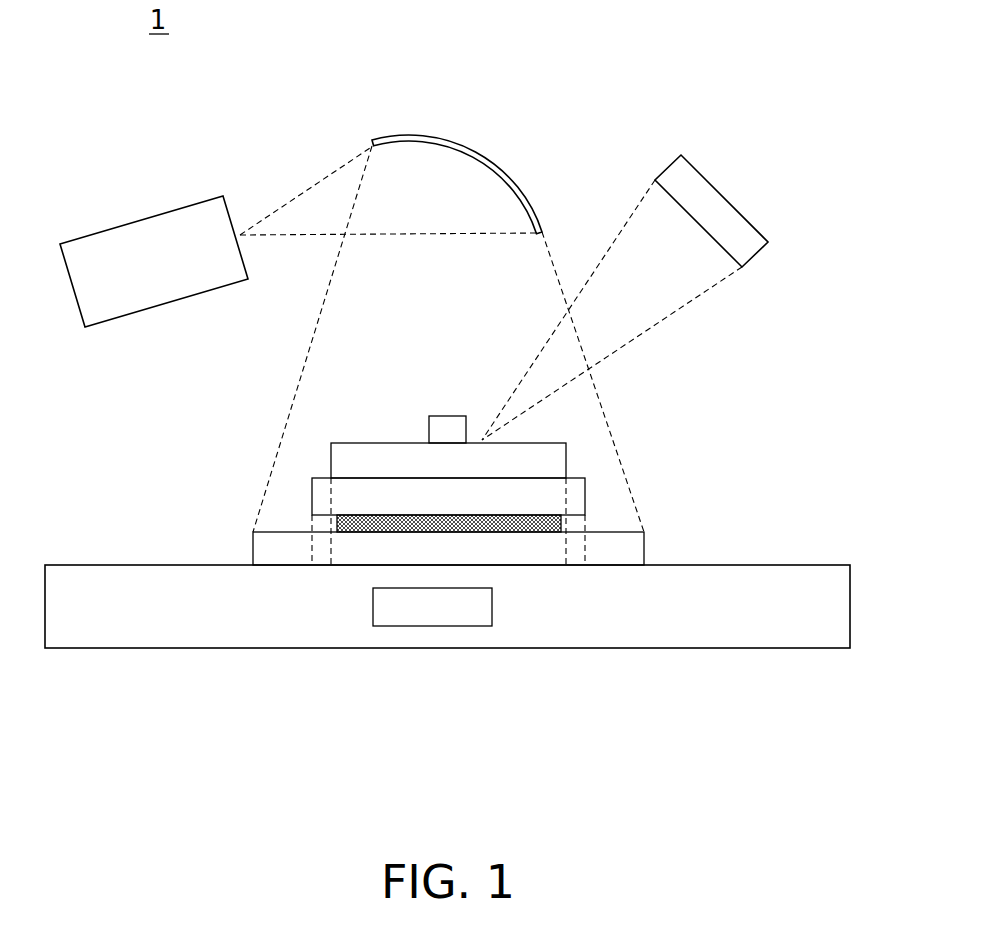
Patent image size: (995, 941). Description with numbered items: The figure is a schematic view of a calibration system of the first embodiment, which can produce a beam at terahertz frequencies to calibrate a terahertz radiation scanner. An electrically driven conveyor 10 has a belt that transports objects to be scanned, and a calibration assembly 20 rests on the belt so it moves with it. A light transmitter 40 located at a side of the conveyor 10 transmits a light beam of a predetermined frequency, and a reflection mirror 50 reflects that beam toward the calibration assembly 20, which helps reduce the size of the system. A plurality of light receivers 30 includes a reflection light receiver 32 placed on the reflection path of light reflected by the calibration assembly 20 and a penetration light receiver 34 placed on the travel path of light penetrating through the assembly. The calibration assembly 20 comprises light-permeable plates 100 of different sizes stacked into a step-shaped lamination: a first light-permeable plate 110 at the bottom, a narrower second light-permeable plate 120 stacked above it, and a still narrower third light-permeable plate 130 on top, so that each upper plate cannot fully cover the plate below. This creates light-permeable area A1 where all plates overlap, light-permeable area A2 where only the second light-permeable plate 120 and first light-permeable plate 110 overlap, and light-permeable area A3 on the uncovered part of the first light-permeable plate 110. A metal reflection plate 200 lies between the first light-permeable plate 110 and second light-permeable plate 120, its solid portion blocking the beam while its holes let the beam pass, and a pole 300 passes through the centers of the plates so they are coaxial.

The conveyor 10 is at (803, 587).
The calibration assembly 20 is at (378, 405).
The light receivers 30 is at (570, 460).
The reflection light receiver 32 is at (745, 245).
The penetration light receiver 34 is at (480, 652).
The light transmitter 40 is at (147, 231).
The reflection mirror 50 is at (468, 152).
The light-permeable plates 100 is at (358, 497).
The first light-permeable plate 110 is at (278, 549).
The second light-permeable plate 120 is at (322, 497).
The third light-permeable plate 130 is at (345, 462).
The reflection plate 200 is at (362, 526).
The pole 300 is at (449, 425).
The light-permeable area A1 is at (545, 438).
The light-permeable area A2 is at (578, 476).
The light-permeable area A3 is at (612, 526).